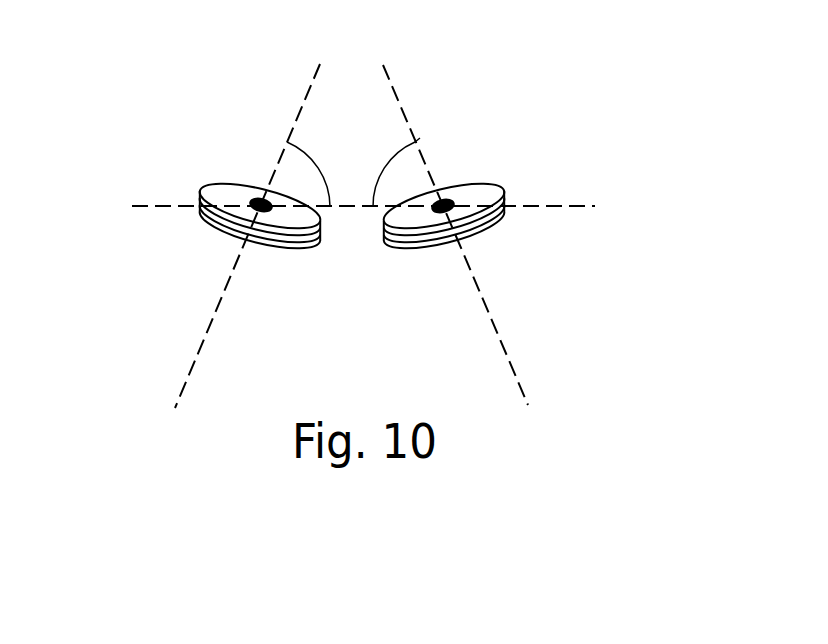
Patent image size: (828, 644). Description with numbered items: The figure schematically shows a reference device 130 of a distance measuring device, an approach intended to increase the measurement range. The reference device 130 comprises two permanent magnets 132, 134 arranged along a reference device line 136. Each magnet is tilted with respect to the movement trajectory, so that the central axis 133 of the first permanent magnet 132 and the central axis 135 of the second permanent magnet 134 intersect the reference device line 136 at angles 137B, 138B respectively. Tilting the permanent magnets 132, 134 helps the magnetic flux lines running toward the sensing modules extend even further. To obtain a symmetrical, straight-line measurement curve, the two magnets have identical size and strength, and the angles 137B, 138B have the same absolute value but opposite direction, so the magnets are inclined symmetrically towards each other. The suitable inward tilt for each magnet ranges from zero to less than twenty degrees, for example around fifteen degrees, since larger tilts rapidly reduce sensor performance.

The reference device 130 is at (176, 138).
The permanent magnet 132 is at (298, 248).
The central axis 133 is at (222, 295).
The permanent magnet 134 is at (493, 182).
The central axis 135 is at (388, 72).
The reference device line 136 is at (557, 208).
The angle 137B is at (290, 142).
The angle 138B is at (388, 155).